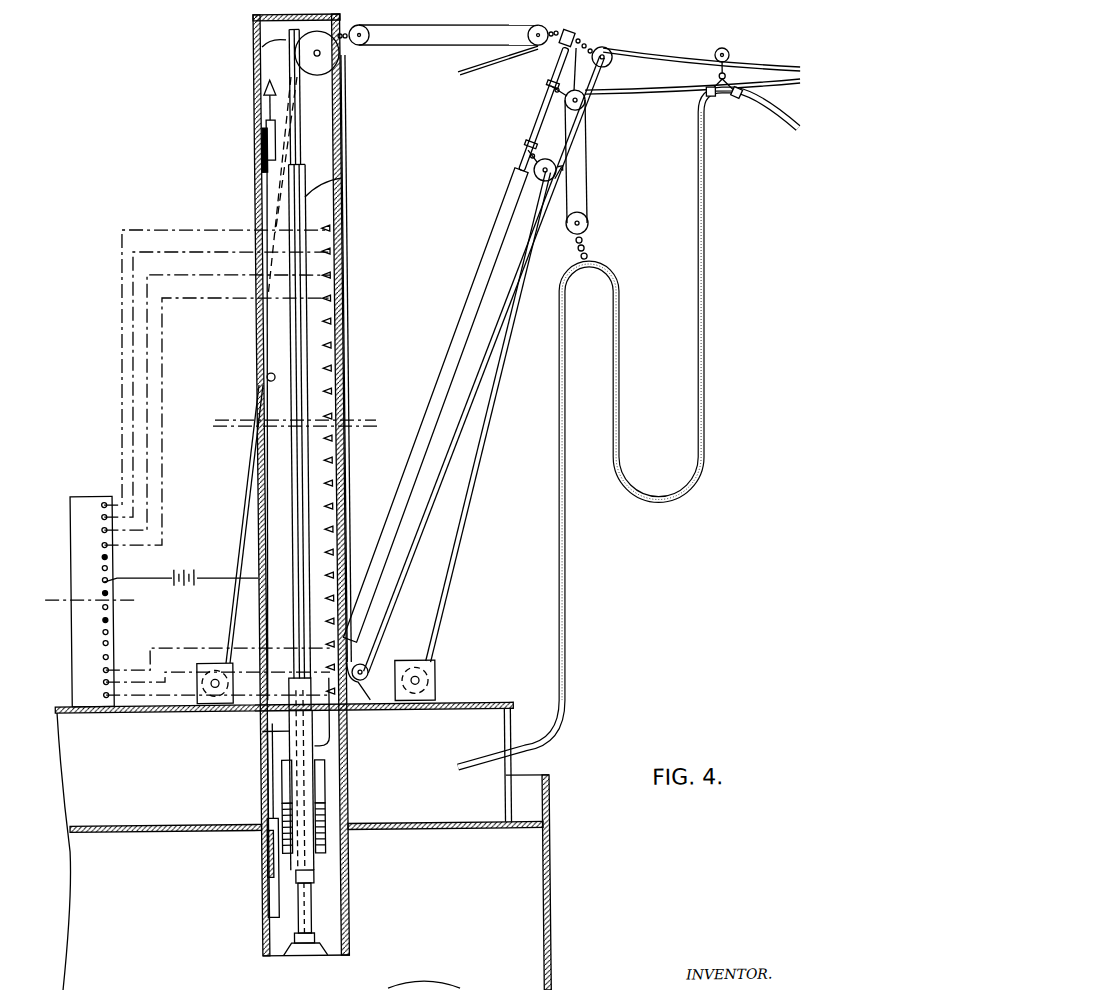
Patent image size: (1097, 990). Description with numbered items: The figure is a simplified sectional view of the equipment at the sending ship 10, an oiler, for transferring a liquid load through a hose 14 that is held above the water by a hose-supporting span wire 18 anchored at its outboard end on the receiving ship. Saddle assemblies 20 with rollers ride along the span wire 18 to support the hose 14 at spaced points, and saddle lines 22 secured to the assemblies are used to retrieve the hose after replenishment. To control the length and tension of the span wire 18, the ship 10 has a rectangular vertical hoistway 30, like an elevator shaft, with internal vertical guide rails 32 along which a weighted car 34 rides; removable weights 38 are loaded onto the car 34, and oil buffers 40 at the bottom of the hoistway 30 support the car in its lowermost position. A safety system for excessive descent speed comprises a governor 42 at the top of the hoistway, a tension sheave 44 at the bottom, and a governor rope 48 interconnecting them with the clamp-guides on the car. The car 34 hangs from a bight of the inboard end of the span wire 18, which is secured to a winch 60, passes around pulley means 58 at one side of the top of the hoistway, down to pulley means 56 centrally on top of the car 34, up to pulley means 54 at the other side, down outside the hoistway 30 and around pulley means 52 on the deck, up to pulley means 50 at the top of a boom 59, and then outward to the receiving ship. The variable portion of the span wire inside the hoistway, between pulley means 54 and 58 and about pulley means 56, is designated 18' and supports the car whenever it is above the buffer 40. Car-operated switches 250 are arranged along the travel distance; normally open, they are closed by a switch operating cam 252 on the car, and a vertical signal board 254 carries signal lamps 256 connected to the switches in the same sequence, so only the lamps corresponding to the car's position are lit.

The supply or load-sending ship 10 is at (487, 690).
The hose 14 is at (707, 384).
The span wire 18 is at (574, 344).
The bight of the span wire 18' is at (300, 354).
The saddle assembly 20 is at (726, 108).
The saddle line 22 is at (630, 94).
The hoistway 30 is at (250, 332).
The guide rail 32 is at (340, 178).
The car 34 is at (332, 778).
The removable weight 38 is at (326, 822).
The oil buffer 40 is at (312, 914).
The governor 42 is at (262, 92).
The tension sheave 44 is at (265, 860).
The governor rope 48 is at (262, 379).
The pulley means 50 is at (608, 66).
The pulley means 52 is at (364, 664).
The pulley means 54 is at (330, 62).
The pulley means 56 is at (268, 720).
The pulley means 58 is at (262, 47).
The boom 59 is at (480, 256).
The winch 60 is at (212, 660).
The car-operated switch 250 is at (338, 338).
The switch operating cam 252 is at (340, 723).
The signal board 254 is at (86, 497).
The signal lamp 256 is at (113, 578).